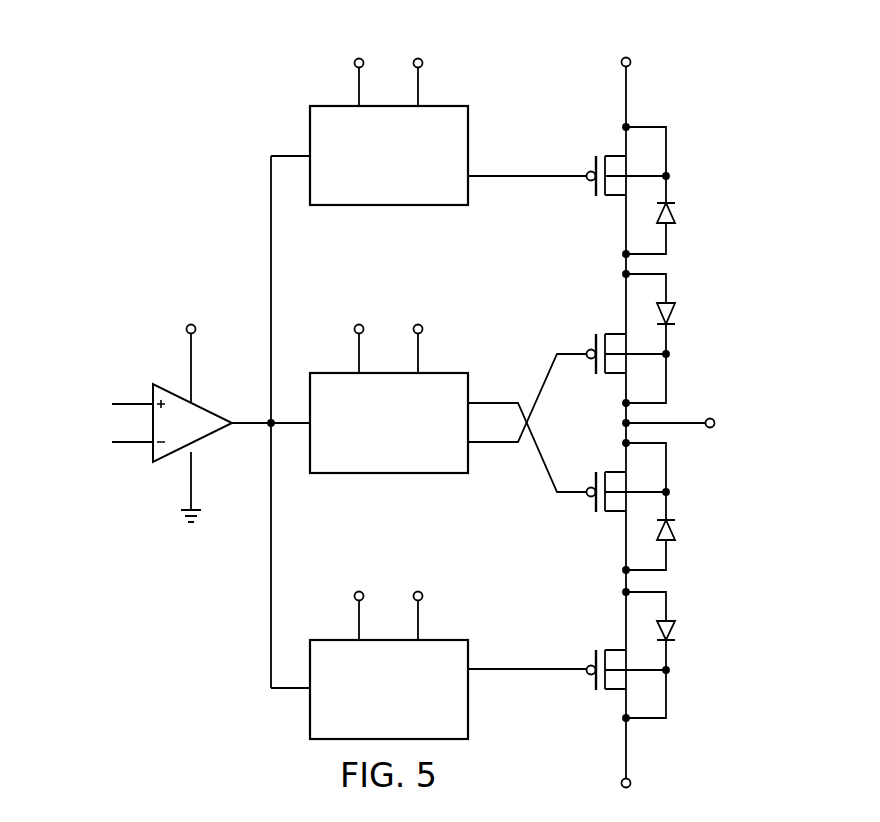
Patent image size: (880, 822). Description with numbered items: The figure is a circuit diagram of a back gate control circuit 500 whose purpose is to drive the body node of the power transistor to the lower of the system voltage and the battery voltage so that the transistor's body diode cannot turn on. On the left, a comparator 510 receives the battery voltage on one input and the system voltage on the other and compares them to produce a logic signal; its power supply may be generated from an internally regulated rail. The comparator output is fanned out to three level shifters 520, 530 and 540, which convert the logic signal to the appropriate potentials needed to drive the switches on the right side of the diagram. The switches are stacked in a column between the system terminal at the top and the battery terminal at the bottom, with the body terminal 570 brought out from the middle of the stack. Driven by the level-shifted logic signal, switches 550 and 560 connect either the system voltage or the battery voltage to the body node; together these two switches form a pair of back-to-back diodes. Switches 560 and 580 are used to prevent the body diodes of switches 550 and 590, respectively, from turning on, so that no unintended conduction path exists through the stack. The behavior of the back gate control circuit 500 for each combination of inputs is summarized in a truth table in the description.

The back gate control circuit 500 is at (217, 92).
The comparator 510 is at (213, 436).
The level shifter 520 is at (389, 207).
The level shifter 530 is at (389, 474).
The level shifter 540 is at (309, 709).
The switch 550 is at (690, 133).
The switch 560 is at (690, 280).
The body voltage terminal VBODY 570 is at (712, 429).
The switch 580 is at (691, 565).
The switch 590 is at (691, 713).